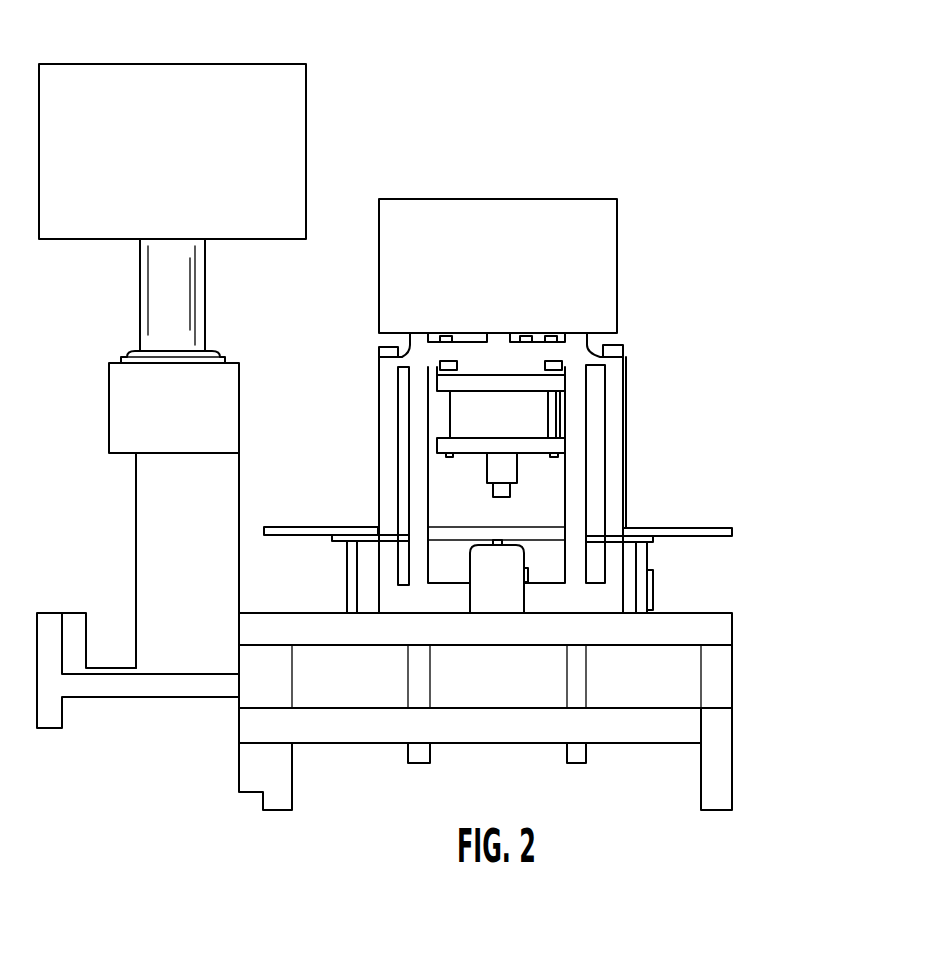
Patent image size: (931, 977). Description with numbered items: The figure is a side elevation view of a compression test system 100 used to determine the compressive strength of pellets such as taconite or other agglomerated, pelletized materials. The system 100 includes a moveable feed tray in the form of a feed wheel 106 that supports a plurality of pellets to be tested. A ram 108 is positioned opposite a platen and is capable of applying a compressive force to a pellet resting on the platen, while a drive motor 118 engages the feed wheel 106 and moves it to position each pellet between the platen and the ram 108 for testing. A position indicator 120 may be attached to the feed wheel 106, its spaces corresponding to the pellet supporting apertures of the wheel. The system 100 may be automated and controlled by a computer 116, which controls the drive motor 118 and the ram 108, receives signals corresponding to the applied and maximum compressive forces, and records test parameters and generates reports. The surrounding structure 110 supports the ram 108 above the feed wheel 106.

The compression test system 100 is at (621, 78).
The feed wheel 106 is at (663, 528).
The ram 108 is at (510, 490).
The press frame assembly 110 is at (523, 417).
The computer 116 is at (253, 130).
The drive motor 118 is at (508, 580).
The position indicator 120 is at (801, 572).